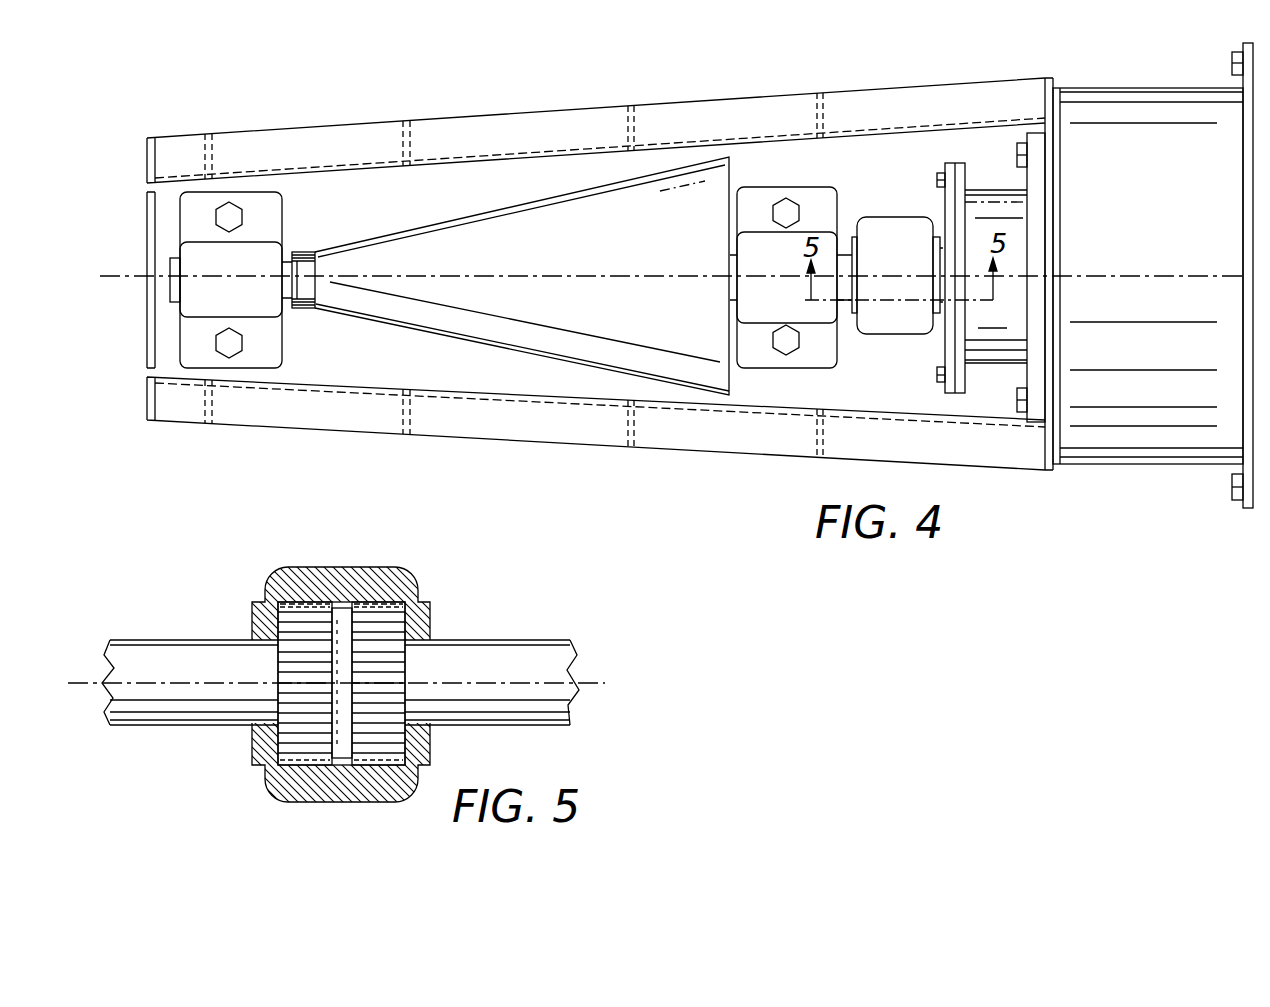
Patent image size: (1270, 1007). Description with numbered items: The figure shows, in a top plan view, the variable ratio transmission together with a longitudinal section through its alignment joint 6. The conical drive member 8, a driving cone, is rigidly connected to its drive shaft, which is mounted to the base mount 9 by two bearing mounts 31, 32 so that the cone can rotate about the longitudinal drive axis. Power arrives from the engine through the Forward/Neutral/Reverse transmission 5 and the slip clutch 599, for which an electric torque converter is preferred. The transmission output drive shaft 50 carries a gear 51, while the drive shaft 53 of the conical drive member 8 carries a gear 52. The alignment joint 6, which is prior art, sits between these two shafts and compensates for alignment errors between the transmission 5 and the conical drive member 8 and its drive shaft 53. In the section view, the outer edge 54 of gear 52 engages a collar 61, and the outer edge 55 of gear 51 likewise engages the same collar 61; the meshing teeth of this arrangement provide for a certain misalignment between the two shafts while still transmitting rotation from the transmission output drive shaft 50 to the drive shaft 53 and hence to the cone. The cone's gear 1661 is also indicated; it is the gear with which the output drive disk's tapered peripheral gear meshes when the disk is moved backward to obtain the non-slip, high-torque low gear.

In FIG. 4, the Forward/Neutral/Reverse transmission 5 is at (992, 210).
In FIG. 4, the alignment joint 6 is at (887, 245).
In FIG. 5, the alignment joint 6 is at (362, 556).
In FIG. 4, the conical drive member 8 is at (544, 222).
In FIG. 4, the base mount 9 is at (458, 118).
In FIG. 4, the bearing mount 31 is at (232, 263).
In FIG. 4, the bearing mount 32 is at (757, 247).
In FIG. 5, the transmission output drive shaft 50 is at (467, 647).
In FIG. 5, the gear 51 is at (378, 725).
In FIG. 5, the gear 52 is at (308, 733).
In FIG. 5, the drive shaft 53 is at (207, 665).
In FIG. 5, the outer edge 54 is at (307, 602).
In FIG. 5, the outer edge 55 is at (382, 602).
In FIG. 4, the collar 61 is at (303, 302).
In FIG. 4, the slip clutch 599 is at (1144, 137).
In FIG. 5, the cone's gear 1661 is at (337, 580).